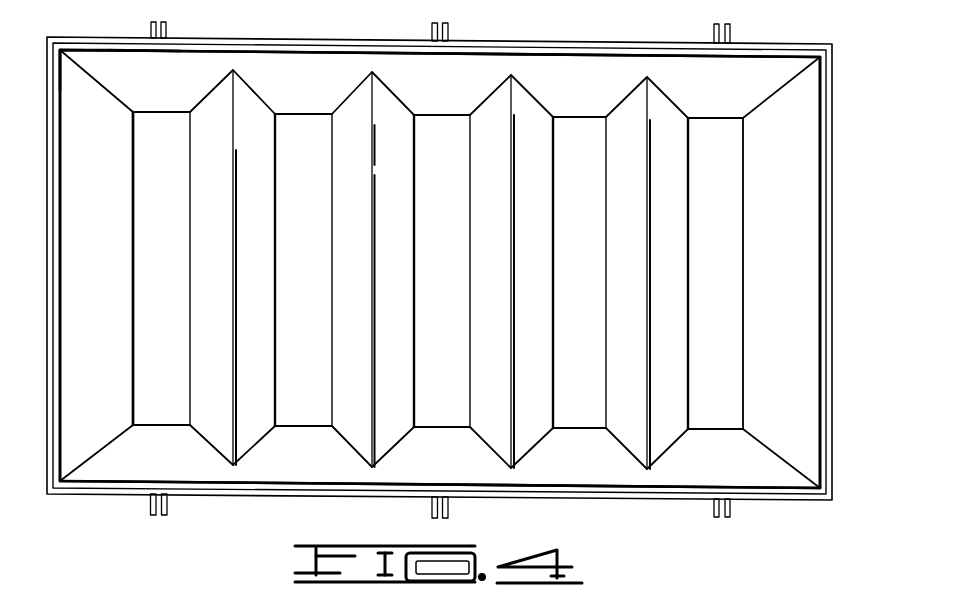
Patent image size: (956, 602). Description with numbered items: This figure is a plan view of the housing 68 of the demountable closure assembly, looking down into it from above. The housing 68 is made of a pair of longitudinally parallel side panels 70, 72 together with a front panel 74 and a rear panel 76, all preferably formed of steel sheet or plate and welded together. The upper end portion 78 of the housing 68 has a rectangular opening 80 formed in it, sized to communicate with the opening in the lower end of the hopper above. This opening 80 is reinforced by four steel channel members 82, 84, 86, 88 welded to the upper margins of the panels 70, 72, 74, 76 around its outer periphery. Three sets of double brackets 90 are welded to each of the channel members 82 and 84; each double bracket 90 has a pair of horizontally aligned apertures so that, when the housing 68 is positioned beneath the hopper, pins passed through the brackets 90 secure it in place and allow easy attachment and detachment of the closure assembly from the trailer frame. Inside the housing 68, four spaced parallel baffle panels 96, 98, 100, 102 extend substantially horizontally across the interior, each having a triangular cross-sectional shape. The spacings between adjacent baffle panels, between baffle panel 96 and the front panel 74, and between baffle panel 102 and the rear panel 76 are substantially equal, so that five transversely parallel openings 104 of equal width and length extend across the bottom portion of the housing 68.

The housing 68 is at (832, 180).
The side panel 70 is at (152, 435).
The side panel 72 is at (158, 88).
The front panel 74 is at (115, 241).
The rear panel 76 is at (757, 221).
The upper end portion 78 is at (135, 57).
The rectangular opening 80 is at (107, 57).
The steel channel member 82 is at (295, 497).
The steel channel member 84 is at (287, 38).
The steel channel member 86 is at (45, 258).
The steel channel member 88 is at (833, 307).
The double bracket 90 is at (167, 23).
The baffle panel 96 is at (260, 380).
The baffle panel 98 is at (403, 358).
The baffle panel 100 is at (540, 377).
The baffle panel 102 is at (673, 390).
The transversely parallel openings 104 is at (177, 289).